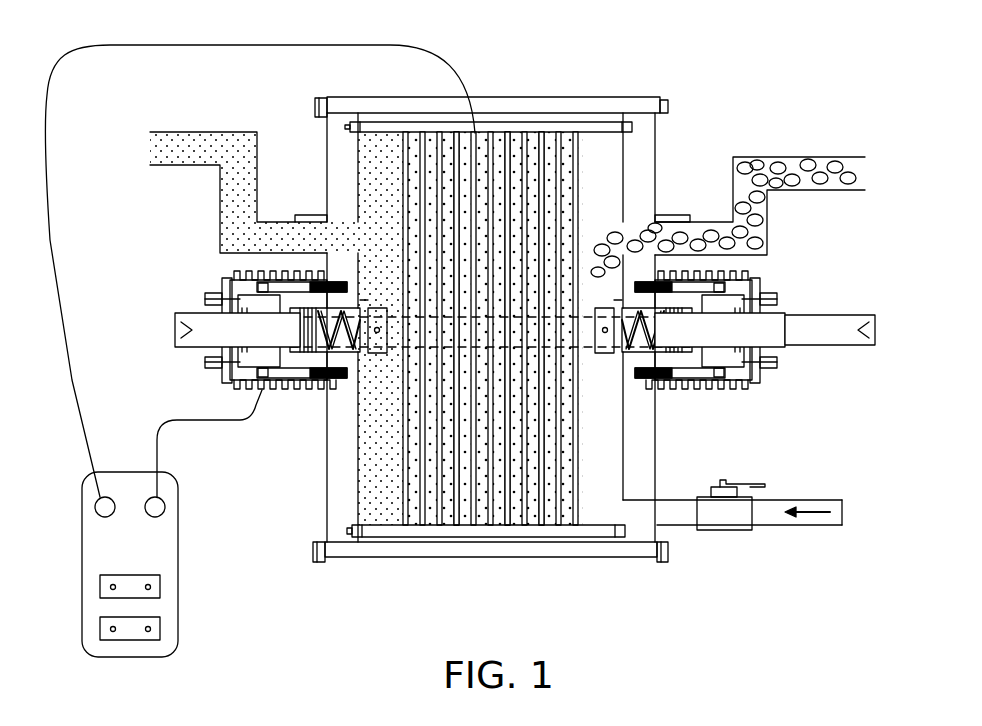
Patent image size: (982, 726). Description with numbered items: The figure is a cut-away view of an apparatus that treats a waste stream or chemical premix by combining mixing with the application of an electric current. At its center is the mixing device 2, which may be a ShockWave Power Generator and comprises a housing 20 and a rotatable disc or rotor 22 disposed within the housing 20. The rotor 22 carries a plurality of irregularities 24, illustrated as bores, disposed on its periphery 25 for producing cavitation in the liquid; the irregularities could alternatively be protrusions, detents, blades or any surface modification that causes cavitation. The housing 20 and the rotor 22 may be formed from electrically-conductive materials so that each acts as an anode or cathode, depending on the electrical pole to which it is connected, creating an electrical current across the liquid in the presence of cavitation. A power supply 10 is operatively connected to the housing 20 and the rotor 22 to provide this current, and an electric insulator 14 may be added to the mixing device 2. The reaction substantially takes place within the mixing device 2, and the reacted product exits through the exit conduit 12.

The mixing device 2 is at (492, 90).
The power supply 10 is at (178, 549).
The exit conduit 12 is at (158, 153).
The electric insulator 14 is at (630, 537).
The housing 20 is at (548, 130).
The rotor 22 is at (552, 537).
The irregularities 24 is at (461, 537).
The periphery 25 is at (405, 416).